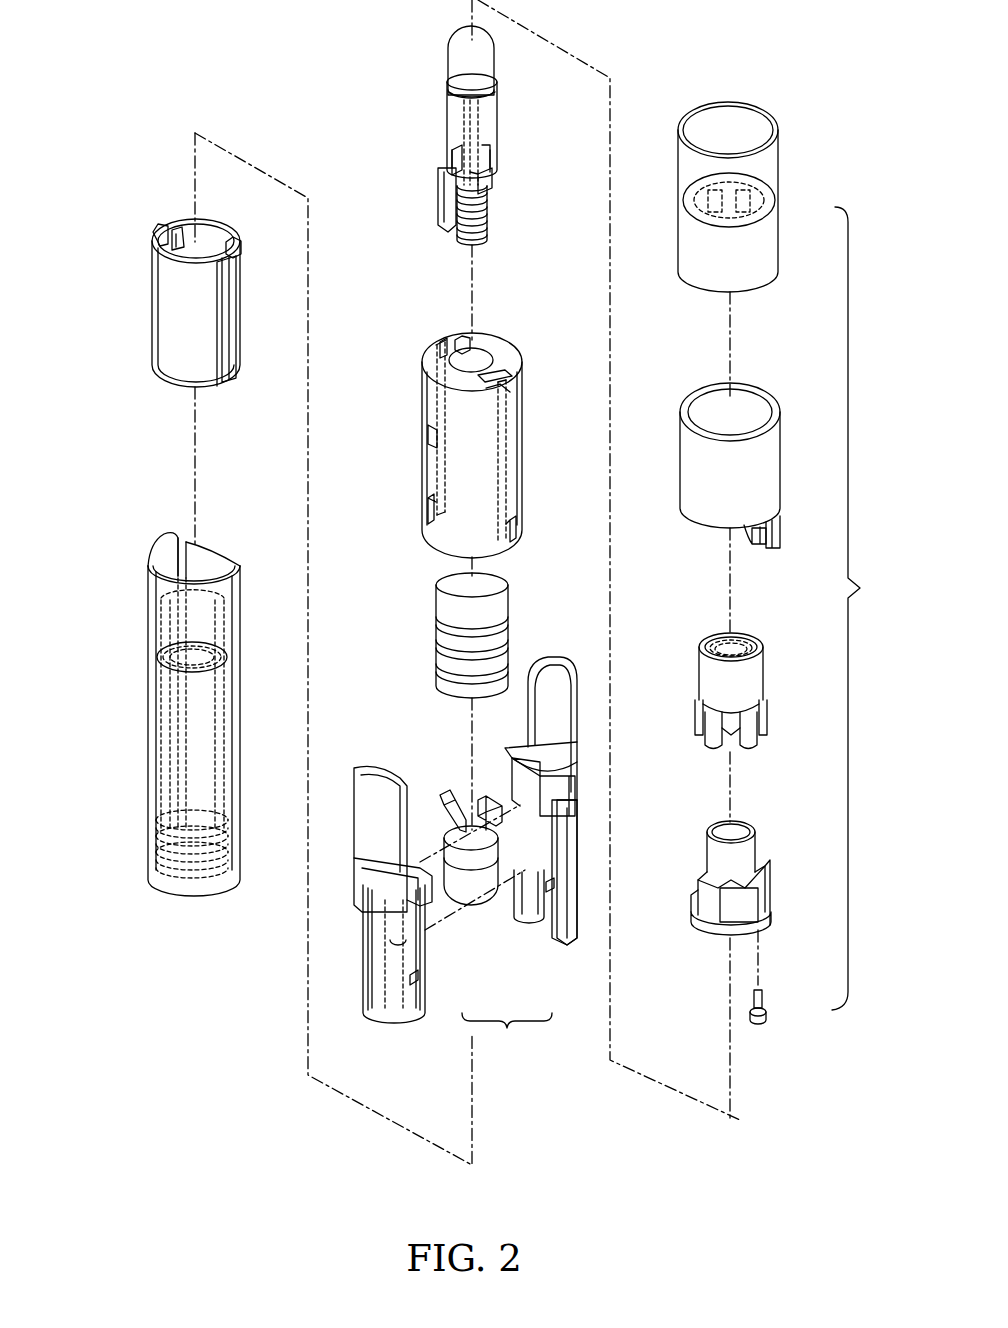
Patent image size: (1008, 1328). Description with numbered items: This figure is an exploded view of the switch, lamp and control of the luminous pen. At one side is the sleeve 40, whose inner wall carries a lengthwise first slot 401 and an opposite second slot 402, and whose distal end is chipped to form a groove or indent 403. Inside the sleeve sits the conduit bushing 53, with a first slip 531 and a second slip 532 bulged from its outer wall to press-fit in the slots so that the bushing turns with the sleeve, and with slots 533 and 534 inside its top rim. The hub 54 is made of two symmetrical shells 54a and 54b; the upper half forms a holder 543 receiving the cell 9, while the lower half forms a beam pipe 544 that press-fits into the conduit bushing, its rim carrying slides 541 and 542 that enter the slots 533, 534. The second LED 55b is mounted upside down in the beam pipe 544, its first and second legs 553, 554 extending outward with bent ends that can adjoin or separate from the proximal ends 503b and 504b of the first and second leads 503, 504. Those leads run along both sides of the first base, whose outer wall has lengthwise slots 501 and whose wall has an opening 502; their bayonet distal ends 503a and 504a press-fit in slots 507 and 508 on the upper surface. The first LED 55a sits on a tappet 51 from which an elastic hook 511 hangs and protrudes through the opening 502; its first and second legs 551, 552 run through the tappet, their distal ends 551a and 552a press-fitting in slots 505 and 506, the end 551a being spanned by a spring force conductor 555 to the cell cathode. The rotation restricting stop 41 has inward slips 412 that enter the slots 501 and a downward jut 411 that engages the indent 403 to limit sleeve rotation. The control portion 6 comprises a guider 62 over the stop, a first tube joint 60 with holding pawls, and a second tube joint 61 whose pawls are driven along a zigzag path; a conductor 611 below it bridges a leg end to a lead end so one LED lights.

The control portion 6 is at (853, 608).
The cell 9 is at (440, 590).
The sleeve 40 is at (152, 752).
The first slot 401 is at (222, 681).
The second slot 402 is at (163, 648).
The groove or indent 403 is at (190, 548).
The rotation restricting stop 41 is at (683, 464).
The jut 411 is at (778, 540).
The slips 412 is at (746, 544).
The tappet 51 is at (498, 124).
The elastic hook 511 is at (440, 184).
The conduit bushing 53 is at (178, 298).
The first slip 531 is at (232, 295).
The second slip 532 is at (158, 226).
The slot 533 is at (236, 243).
The slot 534 is at (178, 230).
The hub 54 is at (507, 1032).
The shell 54a is at (418, 970).
The shell 54b is at (536, 920).
The slide 541 is at (574, 812).
The slide 542 is at (524, 758).
The holder 543 is at (376, 778).
The beam pipe 544 is at (394, 1016).
The first light emitting diode 55a is at (456, 40).
The second light emitting diode 55b is at (450, 830).
The first leg 551 is at (482, 134).
The distal end 551a is at (492, 178).
The second leg 552 is at (462, 110).
The distal end 552a is at (455, 152).
The first leg 553 is at (488, 802).
The second leg 554 is at (445, 795).
The spring force conductor 555 is at (488, 234).
The slots 501 is at (500, 347).
The opening 502 is at (430, 431).
The first metal lead 503 is at (505, 458).
The distal end 503a is at (505, 391).
The proximal end 503b is at (518, 535).
The second metal lead 504 is at (436, 458).
The distal end 504a is at (438, 349).
The proximal end 504b is at (428, 505).
The slot 505 is at (492, 365).
The slot 506 is at (458, 338).
The slot 507 is at (500, 376).
The slot 508 is at (442, 345).
The first tube joint 60 is at (755, 670).
The second tube joint 61 is at (760, 847).
The conductor 611 is at (764, 1001).
The guider 62 is at (766, 231).